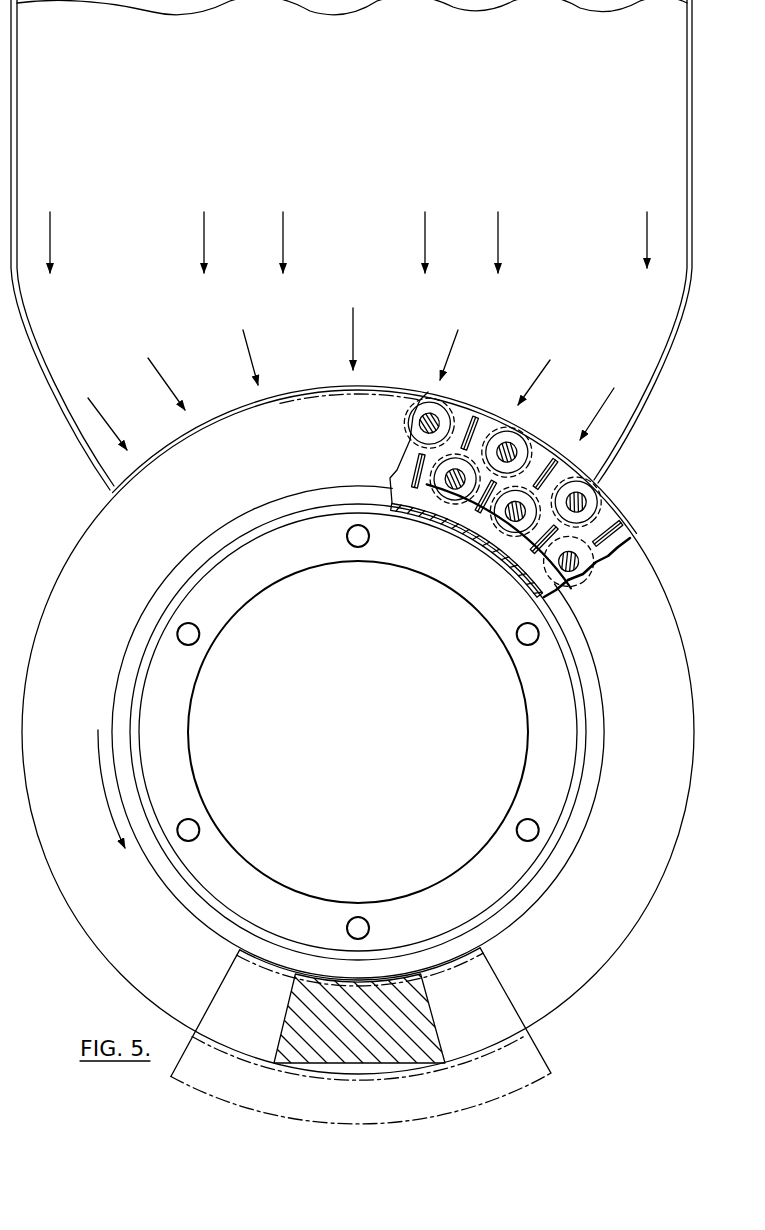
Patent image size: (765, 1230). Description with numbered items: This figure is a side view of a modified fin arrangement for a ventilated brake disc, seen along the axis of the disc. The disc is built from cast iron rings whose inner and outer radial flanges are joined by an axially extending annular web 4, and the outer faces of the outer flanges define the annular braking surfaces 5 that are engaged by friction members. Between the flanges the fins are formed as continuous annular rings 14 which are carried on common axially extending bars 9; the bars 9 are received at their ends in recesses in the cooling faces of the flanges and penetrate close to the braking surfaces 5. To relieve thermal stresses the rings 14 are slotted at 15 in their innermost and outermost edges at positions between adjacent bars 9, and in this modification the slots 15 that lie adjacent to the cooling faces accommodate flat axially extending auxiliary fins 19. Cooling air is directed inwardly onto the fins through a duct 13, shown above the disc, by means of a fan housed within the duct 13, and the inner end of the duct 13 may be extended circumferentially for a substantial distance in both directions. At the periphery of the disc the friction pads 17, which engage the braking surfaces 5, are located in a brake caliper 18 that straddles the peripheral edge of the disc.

The axially extending annular web 4 is at (423, 510).
The annular braking surfaces 5 is at (545, 995).
The bars 9 is at (430, 422).
The duct 13 is at (693, 227).
The continuous annular rings 14 is at (606, 518).
The slots 15 is at (417, 477).
The friction pads 17 is at (410, 1027).
The brake caliper 18 is at (520, 1063).
The auxiliary fins 19 is at (468, 428).